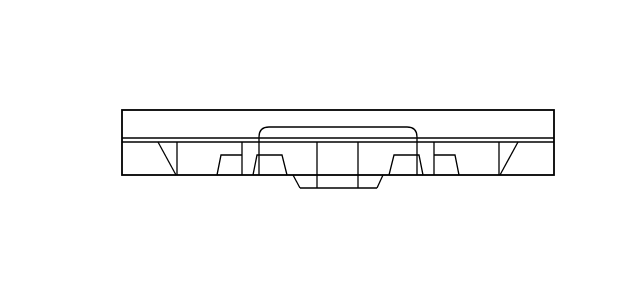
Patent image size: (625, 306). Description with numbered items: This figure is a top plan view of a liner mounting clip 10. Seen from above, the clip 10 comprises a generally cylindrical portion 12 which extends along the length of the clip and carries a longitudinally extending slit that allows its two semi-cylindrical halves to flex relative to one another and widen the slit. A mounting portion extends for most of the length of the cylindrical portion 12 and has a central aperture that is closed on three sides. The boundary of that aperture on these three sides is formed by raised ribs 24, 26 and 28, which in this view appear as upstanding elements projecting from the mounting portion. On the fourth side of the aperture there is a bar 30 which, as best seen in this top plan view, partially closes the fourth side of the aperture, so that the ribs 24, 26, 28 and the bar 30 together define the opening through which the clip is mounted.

The clip 10 is at (448, 85).
The cylindrical portion 12 is at (121, 150).
The raised rib 24 is at (298, 189).
The raised rib 26 is at (343, 178).
The raised rib 28 is at (368, 182).
The bar 30 is at (352, 127).